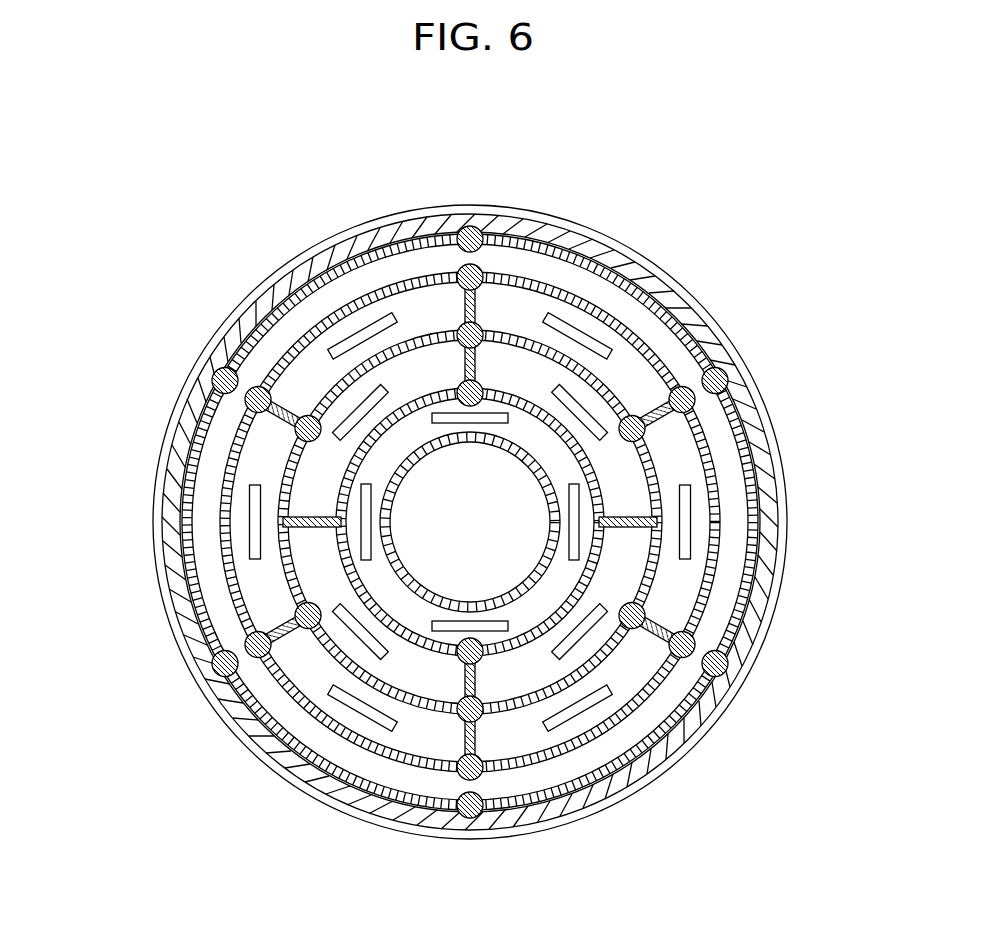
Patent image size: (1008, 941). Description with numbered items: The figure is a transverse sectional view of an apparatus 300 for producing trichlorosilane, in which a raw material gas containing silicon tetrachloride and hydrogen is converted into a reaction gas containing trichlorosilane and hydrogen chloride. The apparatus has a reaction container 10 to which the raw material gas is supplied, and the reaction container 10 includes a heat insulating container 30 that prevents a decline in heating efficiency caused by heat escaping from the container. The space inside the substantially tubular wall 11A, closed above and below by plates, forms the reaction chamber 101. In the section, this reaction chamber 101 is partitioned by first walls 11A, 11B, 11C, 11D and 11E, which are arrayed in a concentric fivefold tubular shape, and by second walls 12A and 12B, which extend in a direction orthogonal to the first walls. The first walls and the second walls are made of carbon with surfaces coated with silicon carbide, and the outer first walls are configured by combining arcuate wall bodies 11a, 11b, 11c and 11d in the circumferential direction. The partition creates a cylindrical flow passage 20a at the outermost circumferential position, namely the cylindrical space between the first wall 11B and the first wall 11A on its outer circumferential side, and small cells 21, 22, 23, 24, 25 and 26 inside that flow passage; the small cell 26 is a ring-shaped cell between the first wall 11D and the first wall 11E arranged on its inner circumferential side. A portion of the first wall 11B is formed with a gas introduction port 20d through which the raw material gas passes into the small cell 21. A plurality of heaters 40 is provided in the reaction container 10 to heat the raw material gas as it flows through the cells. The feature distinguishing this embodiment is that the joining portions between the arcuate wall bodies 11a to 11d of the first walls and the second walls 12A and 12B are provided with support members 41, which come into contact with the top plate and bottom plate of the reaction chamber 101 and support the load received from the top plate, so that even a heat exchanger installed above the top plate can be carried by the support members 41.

The reaction container 10 is at (470, 206).
The apparatus for producing trichlorosilane 300 is at (558, 181).
The heat insulating container 30 is at (742, 362).
The first wall 11A is at (283, 297).
The first wall 11B is at (218, 572).
The first wall 11C is at (445, 715).
The first wall 11D is at (750, 648).
The first wall 11E is at (472, 605).
The arcuate wall body 11a is at (586, 229).
The arcuate wall body 11b is at (448, 278).
The arcuate wall body 11c is at (606, 576).
The arcuate wall body 11d is at (556, 500).
The second wall 12A is at (381, 302).
The second wall 12B is at (380, 360).
The cylindrical flow passage 20a is at (372, 270).
The gas introduction port 20d is at (330, 312).
The small cell 21 is at (293, 360).
The small cell 22 is at (248, 490).
The small cell 23 is at (703, 342).
The small cell 24 is at (218, 640).
The small cell 25 is at (307, 477).
The small cell 26 is at (517, 632).
The heater 40 is at (377, 717).
The support member 41 is at (316, 772).
The reaction chamber 101 is at (497, 748).